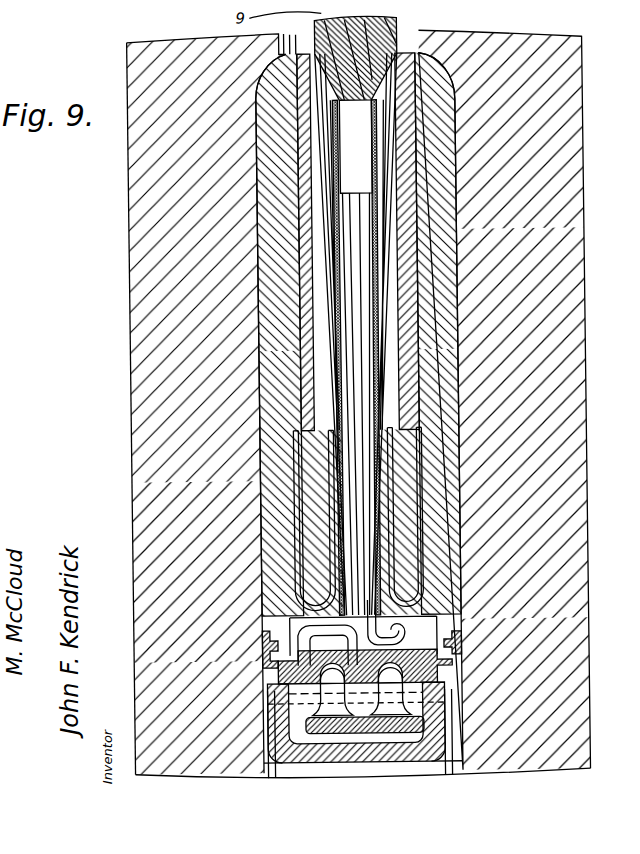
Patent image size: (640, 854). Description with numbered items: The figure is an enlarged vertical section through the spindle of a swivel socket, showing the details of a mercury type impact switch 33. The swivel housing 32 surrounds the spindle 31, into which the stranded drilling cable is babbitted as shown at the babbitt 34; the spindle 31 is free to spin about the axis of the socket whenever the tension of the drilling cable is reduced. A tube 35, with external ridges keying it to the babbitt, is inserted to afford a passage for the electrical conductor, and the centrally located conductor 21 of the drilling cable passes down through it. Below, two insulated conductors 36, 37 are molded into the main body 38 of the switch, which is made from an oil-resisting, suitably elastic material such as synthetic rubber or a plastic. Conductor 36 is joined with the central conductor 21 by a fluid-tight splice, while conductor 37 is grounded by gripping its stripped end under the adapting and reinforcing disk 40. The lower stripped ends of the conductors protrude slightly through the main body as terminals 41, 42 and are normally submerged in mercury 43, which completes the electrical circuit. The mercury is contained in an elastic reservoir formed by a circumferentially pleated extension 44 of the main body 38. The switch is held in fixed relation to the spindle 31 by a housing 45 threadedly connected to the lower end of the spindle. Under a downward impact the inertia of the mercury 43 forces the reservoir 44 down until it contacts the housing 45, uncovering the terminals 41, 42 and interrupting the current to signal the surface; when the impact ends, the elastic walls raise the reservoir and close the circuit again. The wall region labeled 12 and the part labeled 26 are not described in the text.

The wall 12 is at (276, 700).
The centrally located conductor 21 is at (354, 215).
The sleeve wall 26 is at (460, 173).
The spindle 31 is at (446, 334).
The swivel housing 32 is at (567, 250).
The switch 33 is at (436, 737).
The babbitt 34 is at (412, 396).
The tube 35 is at (368, 302).
The insulated conductor 36 is at (427, 684).
The insulated conductor 37 is at (260, 684).
The main body 38 is at (437, 673).
The adapting and reinforcing disk 40 is at (277, 659).
The lower stripped end of conductor 36 41 is at (364, 733).
The lower stripped end of conductor 37 42 is at (339, 740).
The mercury 43 is at (380, 736).
The circumferentially pleated extension 44 is at (261, 747).
The housing 45 is at (463, 764).